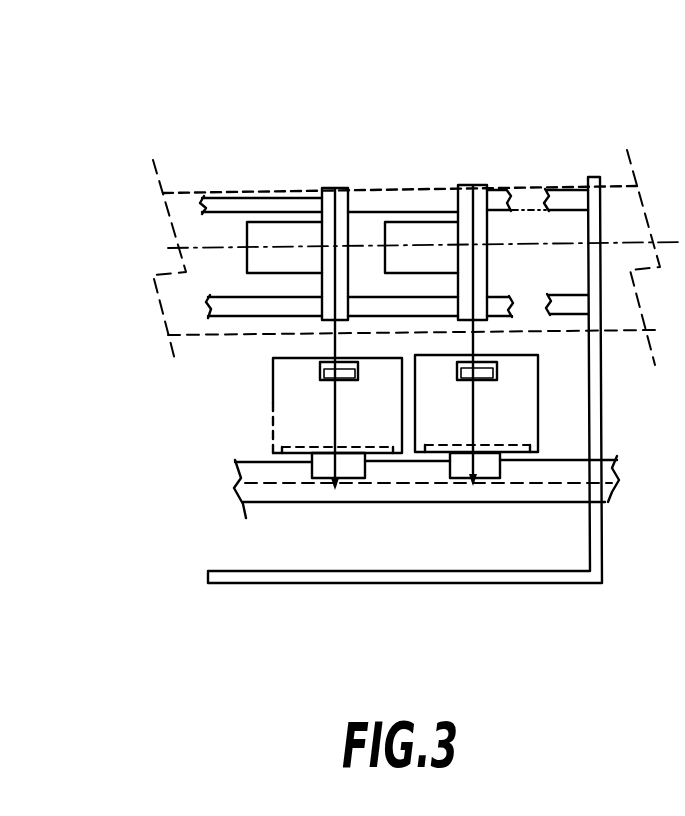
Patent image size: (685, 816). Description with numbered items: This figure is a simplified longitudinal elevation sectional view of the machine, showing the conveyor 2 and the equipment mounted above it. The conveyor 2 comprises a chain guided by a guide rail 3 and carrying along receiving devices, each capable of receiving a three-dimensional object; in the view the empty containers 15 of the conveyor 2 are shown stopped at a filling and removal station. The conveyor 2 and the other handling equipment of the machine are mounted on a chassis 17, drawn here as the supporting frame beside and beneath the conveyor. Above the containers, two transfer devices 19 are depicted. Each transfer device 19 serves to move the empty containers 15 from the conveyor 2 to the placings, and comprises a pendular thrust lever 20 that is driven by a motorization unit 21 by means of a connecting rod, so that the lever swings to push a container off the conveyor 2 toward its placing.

The transfer device 19 is at (279, 186).
The motorization unit 21 is at (306, 222).
The pendular thrust lever 20 is at (341, 281).
The chassis 17 is at (594, 272).
The empty container 15 is at (507, 420).
The conveyor 2 is at (462, 467).
The guide rail 3 is at (508, 492).